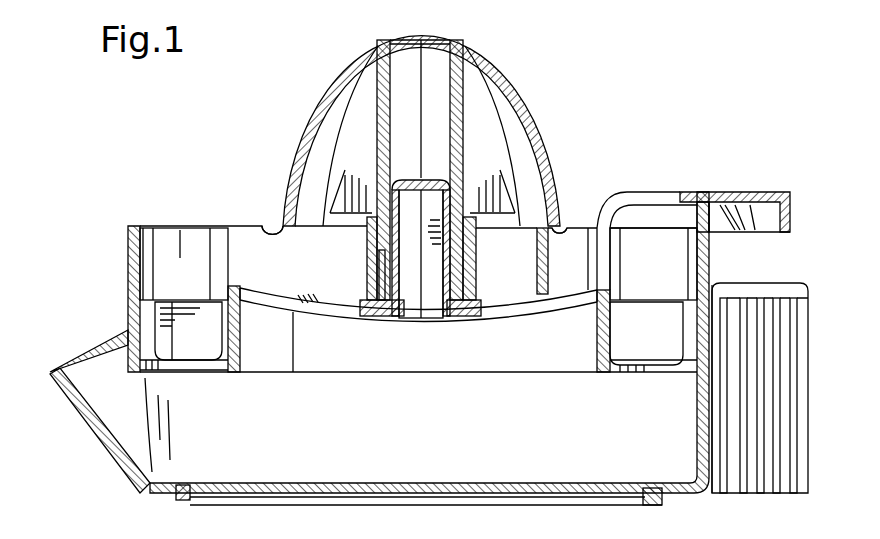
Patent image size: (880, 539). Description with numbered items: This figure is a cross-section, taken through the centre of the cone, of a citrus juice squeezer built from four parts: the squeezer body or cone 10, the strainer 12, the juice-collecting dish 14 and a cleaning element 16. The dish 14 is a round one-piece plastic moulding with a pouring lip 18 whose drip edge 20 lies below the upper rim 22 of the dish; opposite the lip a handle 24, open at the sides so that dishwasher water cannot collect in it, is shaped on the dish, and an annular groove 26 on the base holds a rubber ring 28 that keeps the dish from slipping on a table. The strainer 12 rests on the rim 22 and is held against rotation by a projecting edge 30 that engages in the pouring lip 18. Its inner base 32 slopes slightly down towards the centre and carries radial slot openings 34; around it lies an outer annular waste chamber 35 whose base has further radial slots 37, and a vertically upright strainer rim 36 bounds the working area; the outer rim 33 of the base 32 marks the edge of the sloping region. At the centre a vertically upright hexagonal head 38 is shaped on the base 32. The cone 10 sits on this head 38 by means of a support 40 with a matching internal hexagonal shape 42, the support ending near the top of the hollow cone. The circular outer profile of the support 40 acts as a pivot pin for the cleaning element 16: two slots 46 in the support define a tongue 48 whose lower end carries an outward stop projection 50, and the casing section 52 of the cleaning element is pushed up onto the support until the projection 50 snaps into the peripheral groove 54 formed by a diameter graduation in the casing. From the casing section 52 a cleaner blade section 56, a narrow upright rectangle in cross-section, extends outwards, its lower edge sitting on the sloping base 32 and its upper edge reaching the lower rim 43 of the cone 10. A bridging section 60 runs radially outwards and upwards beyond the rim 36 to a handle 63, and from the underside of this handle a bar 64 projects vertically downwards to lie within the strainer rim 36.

The squeezer body (cone) 10 is at (523, 80).
The strainer 12 is at (186, 222).
The juice-collecting housing (dish) 14 is at (442, 461).
The cleaning element 16 is at (614, 253).
The pouring lip 18 is at (98, 416).
The drip edge 20 is at (52, 368).
The upper rim of the dish 22 is at (699, 300).
The handle 24 is at (738, 486).
The annular groove 26 is at (176, 493).
The rubber ring 28 is at (185, 500).
The projecting edge 30 is at (165, 314).
The inner base 32 is at (330, 306).
The outer rim of the strainer base 33 is at (233, 288).
The openings 34 is at (291, 302).
The waste chamber 35 is at (196, 292).
The strainer rim 36 is at (132, 226).
The radial slots 37 is at (201, 364).
The hexagonal head 38 is at (399, 302).
The support 40 is at (468, 150).
The internal hexagonal shape 42 is at (392, 75).
The lower rim of the cone 43 is at (272, 225).
The slots 46 is at (385, 317).
The tongue 48 is at (366, 258).
The stop projection 50 is at (378, 292).
The casing section 52 is at (478, 255).
The peripheral groove 54 is at (470, 317).
The cleaner blade section 56 is at (548, 298).
The bridging section (handle) 60 is at (663, 192).
The handle 63 is at (764, 192).
The bar 64 is at (712, 222).